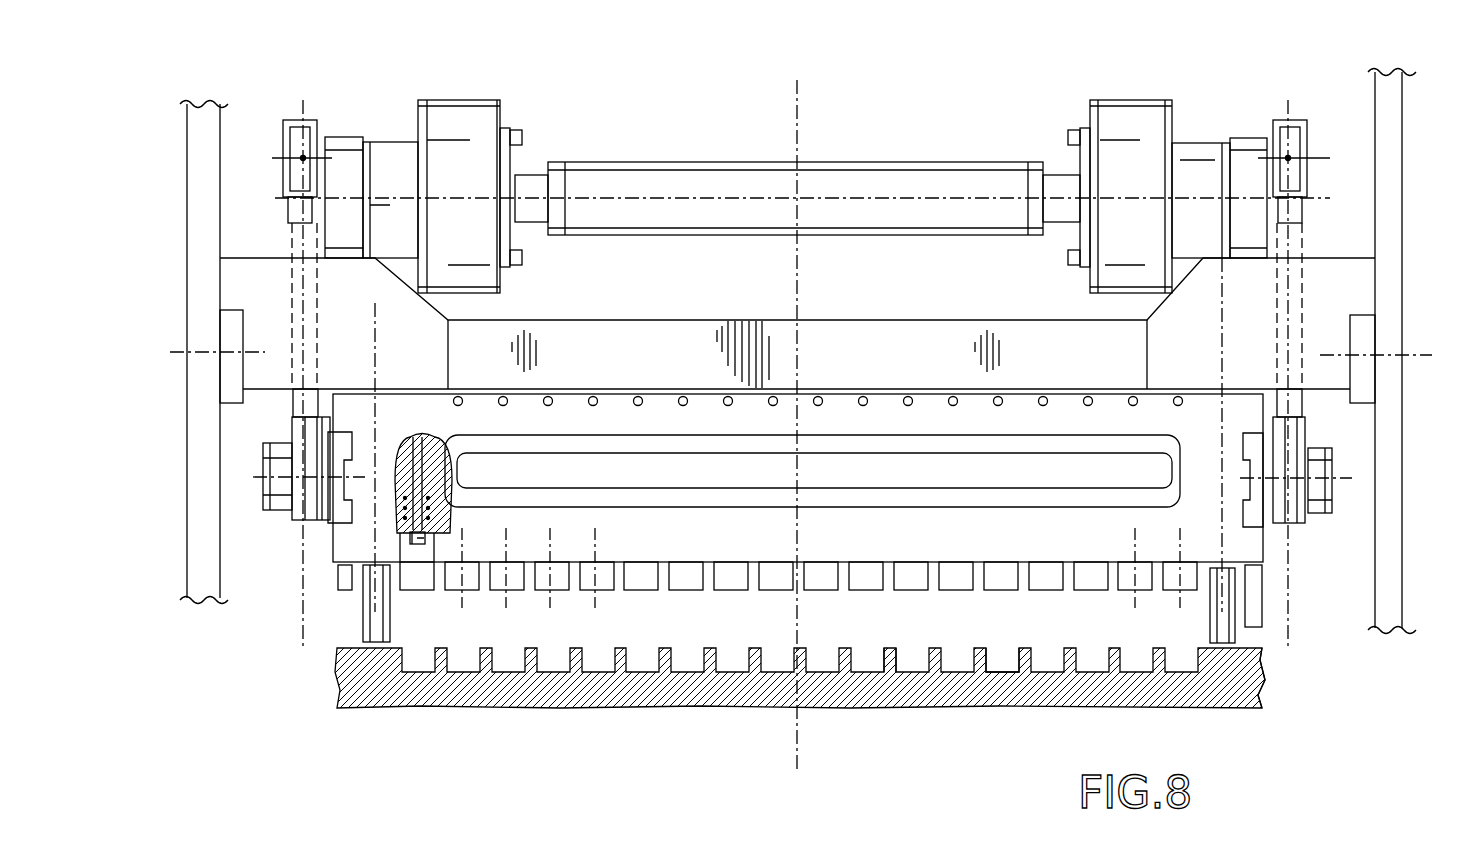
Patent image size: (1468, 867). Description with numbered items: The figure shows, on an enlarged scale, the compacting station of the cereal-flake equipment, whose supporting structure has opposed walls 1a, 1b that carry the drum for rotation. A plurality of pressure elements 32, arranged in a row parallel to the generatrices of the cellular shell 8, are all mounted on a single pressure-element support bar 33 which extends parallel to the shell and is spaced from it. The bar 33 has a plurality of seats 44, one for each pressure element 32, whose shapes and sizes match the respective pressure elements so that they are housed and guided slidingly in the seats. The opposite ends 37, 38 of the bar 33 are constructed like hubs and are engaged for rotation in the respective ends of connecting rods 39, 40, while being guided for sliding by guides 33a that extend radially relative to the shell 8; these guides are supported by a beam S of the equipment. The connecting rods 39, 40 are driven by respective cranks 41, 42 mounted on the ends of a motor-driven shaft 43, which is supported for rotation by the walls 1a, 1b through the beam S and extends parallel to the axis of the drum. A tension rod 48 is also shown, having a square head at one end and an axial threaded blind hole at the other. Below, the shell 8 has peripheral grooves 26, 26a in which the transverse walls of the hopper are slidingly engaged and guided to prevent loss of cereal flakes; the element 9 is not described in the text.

The wall 1a is at (186, 128).
The wall 1b is at (1402, 560).
The beam S is at (865, 352).
The pressure-element support bar 33 is at (640, 522).
The pressure elements 32 is at (640, 570).
The tension rod 48 is at (396, 466).
The seats 44 is at (456, 512).
The guides 33a is at (363, 608).
The motor-driven shaft 43 is at (640, 176).
The crank 41 is at (340, 152).
The connecting rod 39 is at (295, 402).
The end of support bar 37 is at (272, 504).
The connecting rod 40 is at (1290, 242).
The crank 42 is at (1244, 160).
The end of support bar 38 is at (1322, 514).
The peripheral groove 26 is at (340, 682).
The cellular shell 8 is at (887, 657).
The plate groove 9 is at (952, 660).
The peripheral groove 26a is at (1263, 668).